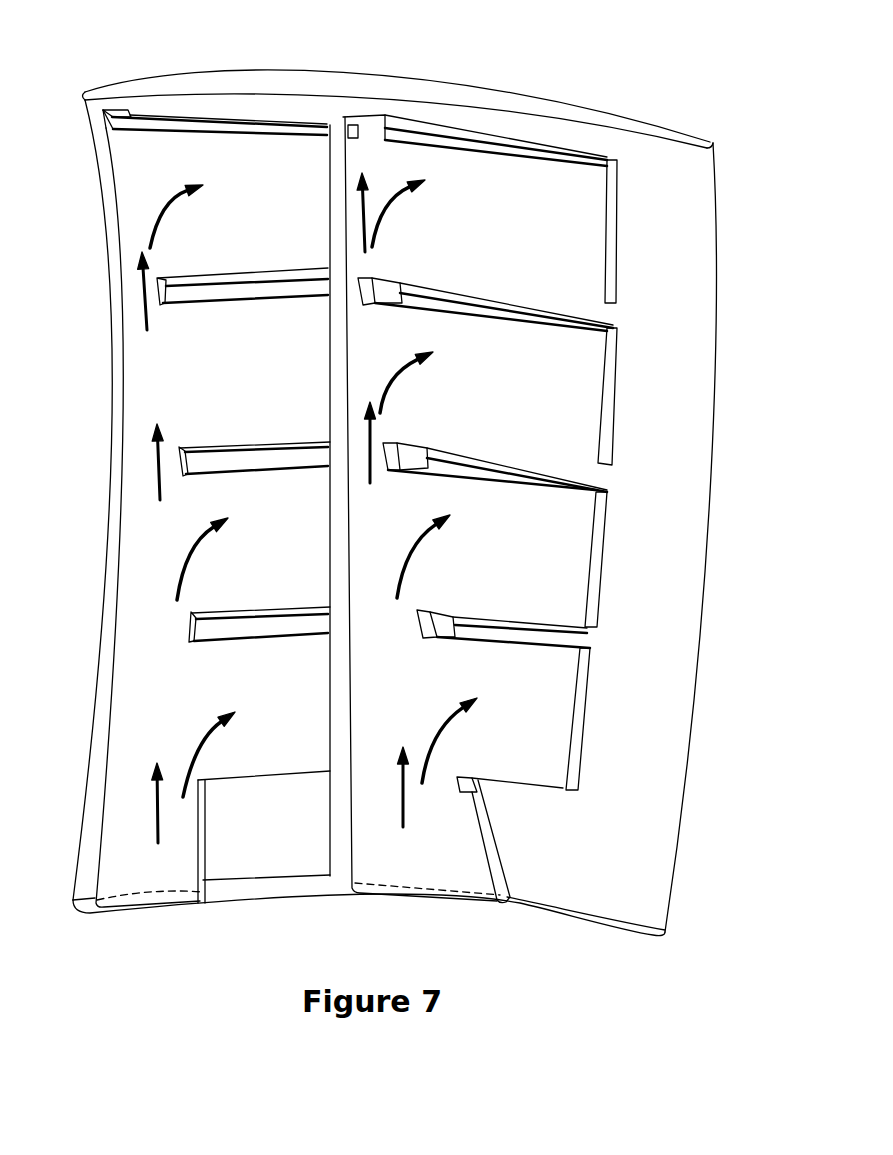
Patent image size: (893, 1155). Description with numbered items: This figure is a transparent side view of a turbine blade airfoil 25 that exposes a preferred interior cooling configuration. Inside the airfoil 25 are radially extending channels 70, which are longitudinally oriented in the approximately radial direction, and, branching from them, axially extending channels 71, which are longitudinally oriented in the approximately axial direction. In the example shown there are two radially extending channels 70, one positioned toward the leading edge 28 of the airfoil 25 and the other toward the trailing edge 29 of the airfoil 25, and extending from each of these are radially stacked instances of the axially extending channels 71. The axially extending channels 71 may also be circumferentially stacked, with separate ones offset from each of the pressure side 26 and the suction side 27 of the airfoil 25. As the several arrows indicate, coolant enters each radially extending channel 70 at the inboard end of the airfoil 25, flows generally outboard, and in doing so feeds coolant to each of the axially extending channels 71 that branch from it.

The turbine blade airfoil 25 is at (415, 516).
The pressure side 26 is at (223, 100).
The suction side 27 is at (333, 67).
The leading edge 28 is at (112, 322).
The trailing edge 29 is at (710, 223).
The radially extending channels 70 is at (130, 262).
The axially extending channels 71 is at (265, 195).